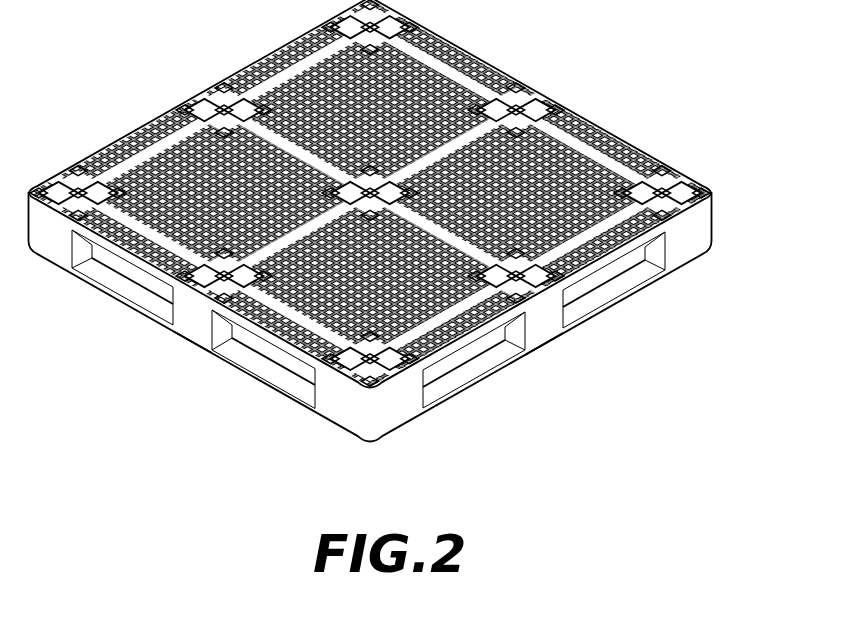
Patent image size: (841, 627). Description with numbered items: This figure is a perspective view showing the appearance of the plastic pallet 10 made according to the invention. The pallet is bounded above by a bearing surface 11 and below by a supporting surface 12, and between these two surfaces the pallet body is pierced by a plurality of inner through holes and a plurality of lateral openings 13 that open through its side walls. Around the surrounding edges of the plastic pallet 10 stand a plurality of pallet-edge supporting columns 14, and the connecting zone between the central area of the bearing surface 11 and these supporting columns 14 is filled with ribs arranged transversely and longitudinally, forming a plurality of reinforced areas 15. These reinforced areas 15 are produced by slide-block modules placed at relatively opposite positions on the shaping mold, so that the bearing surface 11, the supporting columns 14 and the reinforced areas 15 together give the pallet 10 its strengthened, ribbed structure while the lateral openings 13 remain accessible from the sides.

The plastic pallet 10 is at (393, 221).
The bearing surface 11 is at (379, 194).
The supporting surface 12 is at (667, 250).
The lateral openings 13 is at (137, 277).
The pallet-edge supporting columns 14 is at (197, 322).
The reinforced areas 15 is at (266, 106).